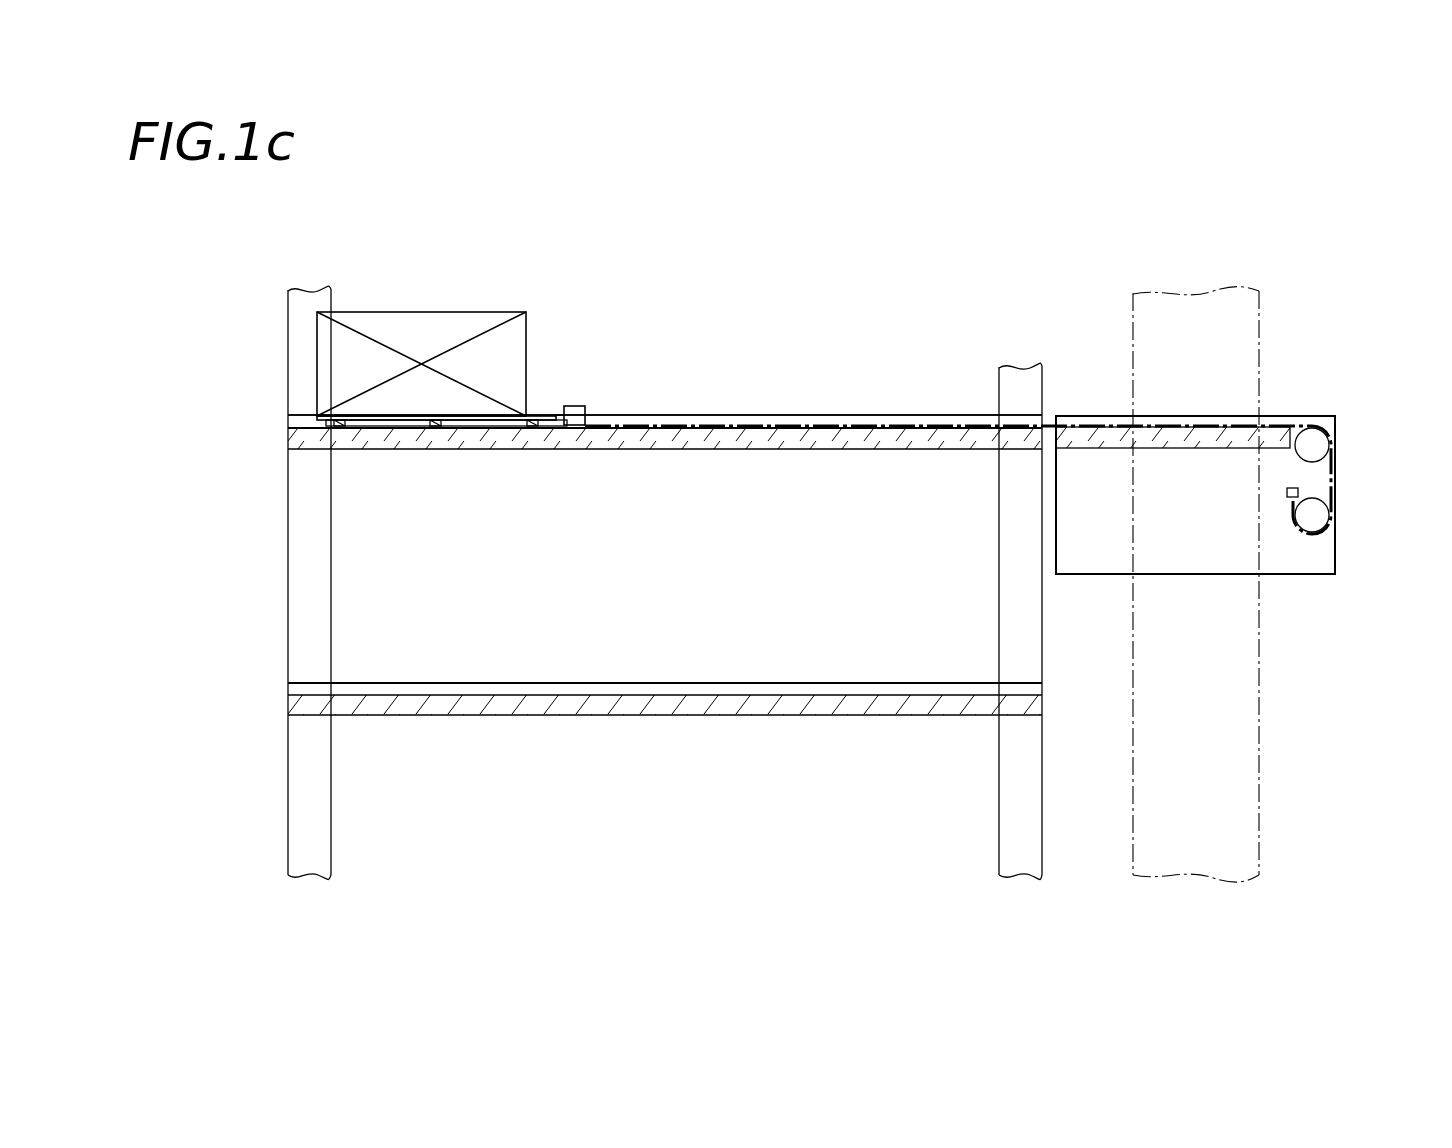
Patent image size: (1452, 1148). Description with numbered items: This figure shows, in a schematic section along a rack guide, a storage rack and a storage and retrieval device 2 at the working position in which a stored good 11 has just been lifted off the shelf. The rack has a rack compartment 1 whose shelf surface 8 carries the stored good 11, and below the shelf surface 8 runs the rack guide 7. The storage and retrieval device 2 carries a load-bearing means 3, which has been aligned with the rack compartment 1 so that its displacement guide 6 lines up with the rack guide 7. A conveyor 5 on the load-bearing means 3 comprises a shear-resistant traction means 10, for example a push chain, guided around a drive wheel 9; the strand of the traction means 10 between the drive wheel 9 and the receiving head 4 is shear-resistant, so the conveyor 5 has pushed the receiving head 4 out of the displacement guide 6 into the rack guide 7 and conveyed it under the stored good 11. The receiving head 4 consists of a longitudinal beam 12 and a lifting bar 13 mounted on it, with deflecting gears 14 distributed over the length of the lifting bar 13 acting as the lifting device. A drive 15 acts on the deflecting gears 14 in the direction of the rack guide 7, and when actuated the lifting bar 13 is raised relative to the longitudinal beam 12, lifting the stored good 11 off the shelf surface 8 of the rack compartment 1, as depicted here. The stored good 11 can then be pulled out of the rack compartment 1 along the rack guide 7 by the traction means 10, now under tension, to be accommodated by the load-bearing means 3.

The rack compartment 1 is at (899, 400).
The storage and retrieval device 2 is at (1215, 780).
The load-bearing means 3 is at (1217, 540).
The receiving head 4 is at (545, 388).
The conveyor 5 is at (1340, 466).
The displacement guide 6 is at (1085, 425).
The rack guide 7 is at (805, 423).
The shelf surface 8 is at (710, 413).
The drive wheel 9 is at (1313, 440).
The traction means 10 is at (1335, 490).
The stored good 11 is at (429, 333).
The longitudinal beam 12 is at (482, 426).
The lifting bar 13 is at (388, 418).
The deflecting gear 14 is at (340, 426).
The drive 15 is at (575, 412).